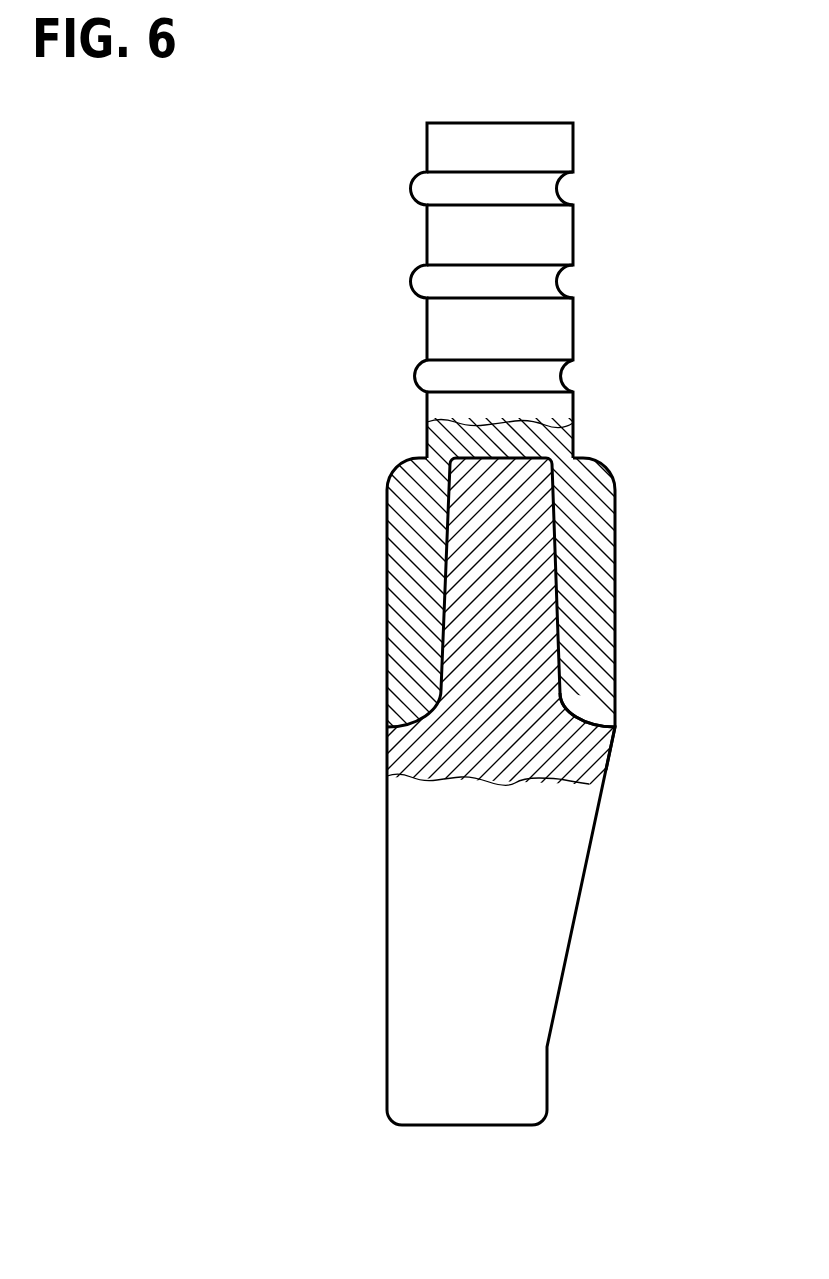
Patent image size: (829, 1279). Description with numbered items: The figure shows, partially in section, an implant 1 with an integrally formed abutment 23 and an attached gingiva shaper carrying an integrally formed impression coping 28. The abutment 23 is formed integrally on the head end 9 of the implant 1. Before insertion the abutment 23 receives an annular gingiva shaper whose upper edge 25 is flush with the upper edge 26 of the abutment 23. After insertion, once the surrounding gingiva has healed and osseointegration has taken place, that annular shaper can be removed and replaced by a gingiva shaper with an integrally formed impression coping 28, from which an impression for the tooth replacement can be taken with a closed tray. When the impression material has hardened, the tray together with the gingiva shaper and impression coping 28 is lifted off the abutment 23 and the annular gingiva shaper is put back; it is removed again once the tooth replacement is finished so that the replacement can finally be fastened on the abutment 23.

The implant 1 is at (495, 908).
The head end 9 is at (607, 722).
The abutment 23 is at (490, 618).
The upper edge 25 is at (577, 457).
The upper edge 26 is at (523, 453).
The impression coping 28 is at (460, 322).